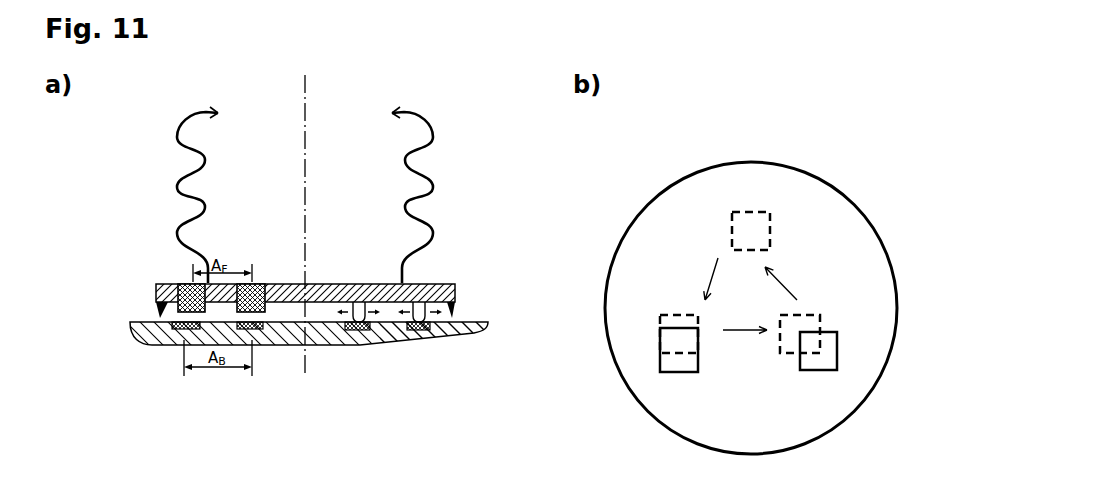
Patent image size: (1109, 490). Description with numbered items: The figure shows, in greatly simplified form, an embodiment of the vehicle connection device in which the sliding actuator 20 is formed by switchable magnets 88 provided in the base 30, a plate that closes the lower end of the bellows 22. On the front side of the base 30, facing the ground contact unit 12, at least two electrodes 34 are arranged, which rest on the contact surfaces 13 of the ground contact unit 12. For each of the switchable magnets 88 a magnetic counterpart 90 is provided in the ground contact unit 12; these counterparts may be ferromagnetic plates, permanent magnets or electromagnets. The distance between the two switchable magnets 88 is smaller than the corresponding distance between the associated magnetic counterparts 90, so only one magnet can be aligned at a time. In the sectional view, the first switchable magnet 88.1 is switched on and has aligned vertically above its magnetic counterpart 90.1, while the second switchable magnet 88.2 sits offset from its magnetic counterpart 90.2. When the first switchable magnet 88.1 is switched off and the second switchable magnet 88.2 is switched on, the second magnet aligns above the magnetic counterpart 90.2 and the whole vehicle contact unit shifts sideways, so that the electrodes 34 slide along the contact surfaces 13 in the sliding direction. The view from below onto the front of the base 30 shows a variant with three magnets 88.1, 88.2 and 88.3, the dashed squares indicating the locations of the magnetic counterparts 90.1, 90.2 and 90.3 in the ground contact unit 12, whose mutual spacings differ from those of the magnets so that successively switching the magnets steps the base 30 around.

In FIG. 11a, the ground contact unit 12 is at (433, 333).
In FIG. 11a, the contact surfaces 13 is at (424, 330).
In FIG. 11a, the sliding actuator 20 is at (286, 354).
In FIG. 11b, the sliding actuator 20 is at (842, 148).
In FIG. 11a, the bellows 22 is at (418, 170).
In FIG. 11a, the base 30 is at (420, 283).
In FIG. 11b, the base 30 is at (722, 178).
In FIG. 11a, the electrodes 34 is at (424, 284).
In FIG. 11a, the switchable magnets 88 is at (157, 197).
In FIG. 11a, the first switchable magnet 88.1 is at (256, 283).
In FIG. 11b, the first switchable magnet 88.1 is at (740, 212).
In FIG. 11a, the second switchable magnet 88.2 is at (182, 283).
In FIG. 11b, the second switchable magnet 88.2 is at (690, 372).
In FIG. 11b, the third switchable magnet 88.3 is at (823, 371).
In FIG. 11a, the magnetic counterparts 90 is at (173, 406).
In FIG. 11a, the first magnetic counterpart 90.1 is at (258, 332).
In FIG. 11b, the first magnetic counterpart 90.1 is at (772, 214).
In FIG. 11a, the second magnetic counterpart 90.2 is at (184, 330).
In FIG. 11b, the second magnetic counterpart 90.2 is at (690, 315).
In FIG. 11b, the third magnetic counterpart 90.3 is at (810, 314).